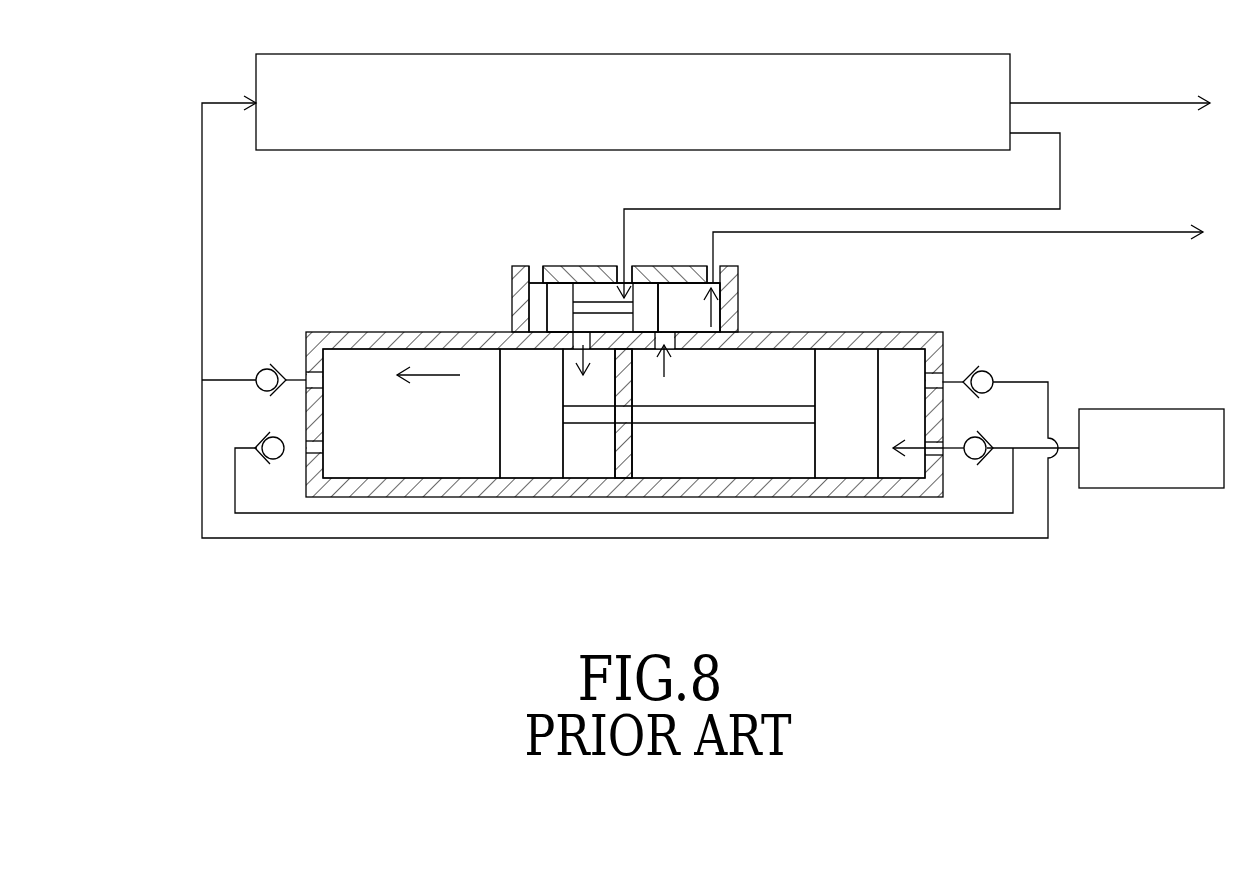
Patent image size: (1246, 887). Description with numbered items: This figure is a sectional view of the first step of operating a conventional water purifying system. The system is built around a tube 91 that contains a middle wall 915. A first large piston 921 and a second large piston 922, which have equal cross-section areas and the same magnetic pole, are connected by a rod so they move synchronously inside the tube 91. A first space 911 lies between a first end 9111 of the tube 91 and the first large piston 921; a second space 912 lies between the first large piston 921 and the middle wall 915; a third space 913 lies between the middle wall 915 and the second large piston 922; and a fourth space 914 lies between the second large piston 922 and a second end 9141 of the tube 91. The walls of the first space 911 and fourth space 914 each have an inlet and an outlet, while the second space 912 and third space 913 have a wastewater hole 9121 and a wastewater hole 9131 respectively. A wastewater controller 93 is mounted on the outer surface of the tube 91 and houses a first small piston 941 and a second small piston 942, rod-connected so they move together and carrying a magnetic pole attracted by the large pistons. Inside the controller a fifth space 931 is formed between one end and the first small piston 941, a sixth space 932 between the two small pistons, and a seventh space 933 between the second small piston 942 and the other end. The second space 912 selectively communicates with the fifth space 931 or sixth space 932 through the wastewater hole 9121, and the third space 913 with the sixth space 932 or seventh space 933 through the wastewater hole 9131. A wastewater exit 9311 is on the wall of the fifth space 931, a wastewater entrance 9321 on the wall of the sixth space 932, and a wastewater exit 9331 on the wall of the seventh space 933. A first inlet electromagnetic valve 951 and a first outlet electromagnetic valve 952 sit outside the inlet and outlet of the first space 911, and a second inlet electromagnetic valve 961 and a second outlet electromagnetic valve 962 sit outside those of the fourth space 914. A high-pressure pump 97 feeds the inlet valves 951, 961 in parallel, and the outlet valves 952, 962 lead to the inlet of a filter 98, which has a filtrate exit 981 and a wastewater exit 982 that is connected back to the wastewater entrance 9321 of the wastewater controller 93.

The tube 91 is at (388, 331).
The first space 911 is at (925, 413).
The first end 9111 is at (958, 420).
The second space 912 is at (762, 459).
The wastewater hole 9121 is at (674, 347).
The third space 913 is at (613, 459).
The wastewater hole 9131 is at (577, 351).
The fourth space 914 is at (452, 448).
The second end 9141 is at (298, 415).
The middle wall 915 is at (630, 457).
The first large piston 921 is at (862, 357).
The second large piston 922 is at (513, 360).
The wastewater controller 93 is at (752, 297).
The fifth space 931 is at (689, 296).
The wastewater exit 9311 is at (718, 270).
The sixth space 932 is at (596, 282).
The wastewater entrance 9321 is at (618, 266).
The seventh space 933 is at (524, 295).
The wastewater exit 9331 is at (532, 268).
The first small piston 941 is at (643, 290).
The second small piston 942 is at (562, 290).
The first inlet electromagnetic valve 951 is at (978, 457).
The first outlet electromagnetic valve 952 is at (986, 372).
The second inlet electromagnetic valve 961 is at (264, 441).
The second outlet electromagnetic valve 962 is at (263, 368).
The high-pressure pump 97 is at (1152, 418).
The filter 98 is at (697, 54).
The filtrate exit 981 is at (1012, 101).
The wastewater exit 982 is at (1012, 132).